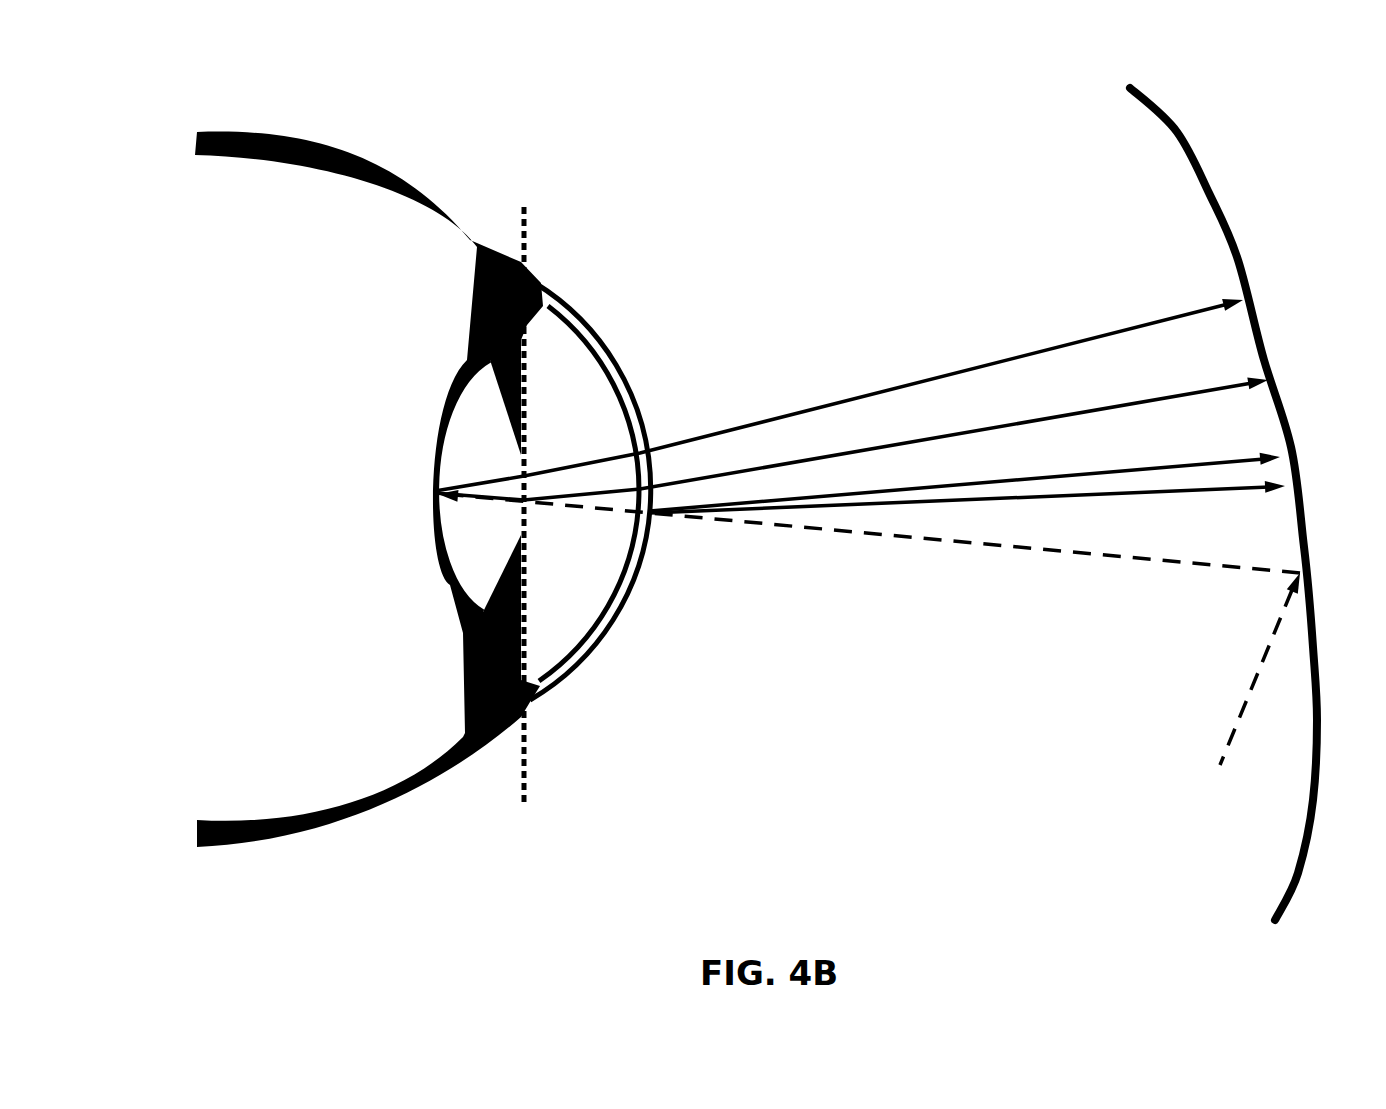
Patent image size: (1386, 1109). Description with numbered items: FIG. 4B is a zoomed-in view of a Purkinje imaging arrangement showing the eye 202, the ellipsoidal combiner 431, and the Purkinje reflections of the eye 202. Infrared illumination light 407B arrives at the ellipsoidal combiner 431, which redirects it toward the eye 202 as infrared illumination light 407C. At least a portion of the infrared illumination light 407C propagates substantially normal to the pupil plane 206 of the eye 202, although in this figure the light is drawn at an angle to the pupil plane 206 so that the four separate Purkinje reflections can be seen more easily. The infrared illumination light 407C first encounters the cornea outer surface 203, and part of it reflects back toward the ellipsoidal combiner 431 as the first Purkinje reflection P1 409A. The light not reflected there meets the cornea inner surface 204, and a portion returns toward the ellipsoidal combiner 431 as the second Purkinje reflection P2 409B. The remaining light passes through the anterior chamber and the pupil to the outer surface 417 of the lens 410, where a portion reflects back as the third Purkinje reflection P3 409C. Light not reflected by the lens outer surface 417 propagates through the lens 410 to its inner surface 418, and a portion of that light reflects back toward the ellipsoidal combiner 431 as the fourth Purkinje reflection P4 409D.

The eye 202 is at (392, 158).
The lens 410 is at (492, 425).
The cornea outer surface 203 is at (654, 529).
The cornea inner surface 204 is at (630, 529).
The pupil plane 206 is at (524, 813).
The inner surface of lens 418 is at (433, 487).
The outer surface of lens 417 is at (519, 506).
The fourth Purkinje reflection P4 409D is at (1205, 307).
The third Purkinje reflection P3 409C is at (1236, 382).
The second Purkinje reflection P2 409B is at (1135, 467).
The first Purkinje reflection P1 409A is at (1240, 489).
The infrared illumination light 407C is at (1078, 554).
The infrared illumination light 407B is at (1220, 765).
The ellipsoidal combiner 431 is at (1178, 132).